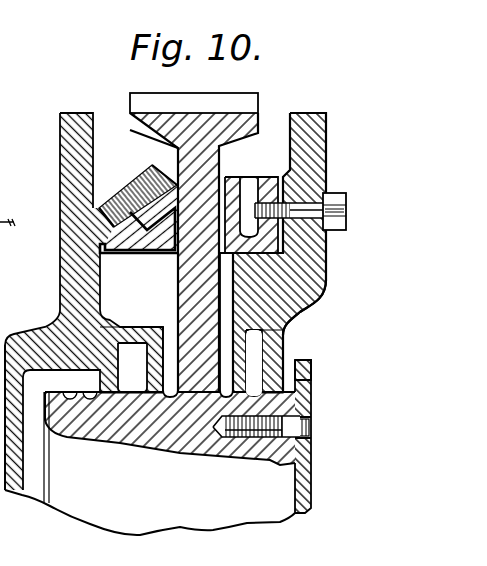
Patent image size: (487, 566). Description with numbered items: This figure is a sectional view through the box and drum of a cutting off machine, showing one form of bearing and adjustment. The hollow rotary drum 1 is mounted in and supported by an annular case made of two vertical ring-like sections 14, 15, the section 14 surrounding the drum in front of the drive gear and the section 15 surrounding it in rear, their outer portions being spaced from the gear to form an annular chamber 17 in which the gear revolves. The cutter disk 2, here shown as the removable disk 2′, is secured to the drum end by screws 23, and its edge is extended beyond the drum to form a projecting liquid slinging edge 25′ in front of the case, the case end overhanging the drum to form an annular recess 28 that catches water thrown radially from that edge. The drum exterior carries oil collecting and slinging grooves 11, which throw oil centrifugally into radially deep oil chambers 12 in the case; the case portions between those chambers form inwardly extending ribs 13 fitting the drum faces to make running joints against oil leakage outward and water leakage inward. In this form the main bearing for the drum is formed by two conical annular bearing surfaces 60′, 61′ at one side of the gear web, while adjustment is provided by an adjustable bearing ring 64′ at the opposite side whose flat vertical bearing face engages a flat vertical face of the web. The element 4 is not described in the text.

The hollow rotary drum 1 is at (190, 447).
The cutter disk 2 is at (3, 310).
The cutter disk 2′ is at (313, 488).
The casing part 4 is at (7, 191).
The oil collecting and slinging grooves 11 is at (192, 325).
The oil chambers 12 is at (133, 350).
The inwardly extending ribs 13 is at (160, 362).
The case section 14 is at (320, 289).
The case section 15 is at (62, 291).
The annular chamber 17 is at (272, 115).
The screws 23 is at (256, 449).
The liquid slinging edge 25′ is at (300, 362).
The annular recesses 28 is at (281, 338).
The conical annular bearing surface 60′ is at (141, 193).
The conical annular bearing surface 61′ is at (148, 165).
The adjustable bearing ring 64′ is at (278, 241).